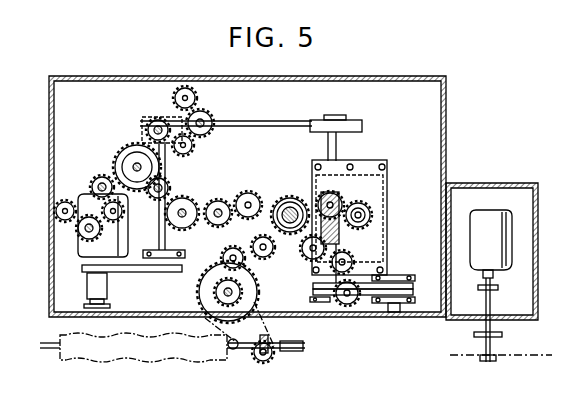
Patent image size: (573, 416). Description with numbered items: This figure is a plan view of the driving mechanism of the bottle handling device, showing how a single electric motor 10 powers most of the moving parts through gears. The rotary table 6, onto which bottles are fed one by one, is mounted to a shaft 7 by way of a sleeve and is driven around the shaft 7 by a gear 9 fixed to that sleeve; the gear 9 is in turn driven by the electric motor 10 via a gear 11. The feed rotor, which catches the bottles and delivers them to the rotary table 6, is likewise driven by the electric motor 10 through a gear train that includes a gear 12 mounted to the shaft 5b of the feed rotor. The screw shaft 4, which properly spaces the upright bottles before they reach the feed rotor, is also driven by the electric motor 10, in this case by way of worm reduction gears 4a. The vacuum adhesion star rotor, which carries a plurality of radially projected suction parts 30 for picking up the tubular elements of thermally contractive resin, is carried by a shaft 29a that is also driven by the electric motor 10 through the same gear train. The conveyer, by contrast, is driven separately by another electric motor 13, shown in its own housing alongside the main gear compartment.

The screw shaft 4 is at (110, 356).
The worm reduction gears 4a is at (272, 361).
The shaft of the feed rotor 5b is at (250, 274).
The rotary table 6 is at (233, 349).
The shaft 7 is at (293, 233).
The gear 9 is at (268, 196).
The electric motor 10 is at (124, 236).
The gear 11 is at (342, 201).
The gear 12 is at (196, 291).
The electric motor 13 is at (513, 228).
The shaft 29a is at (182, 196).
The suction parts 30 is at (212, 226).